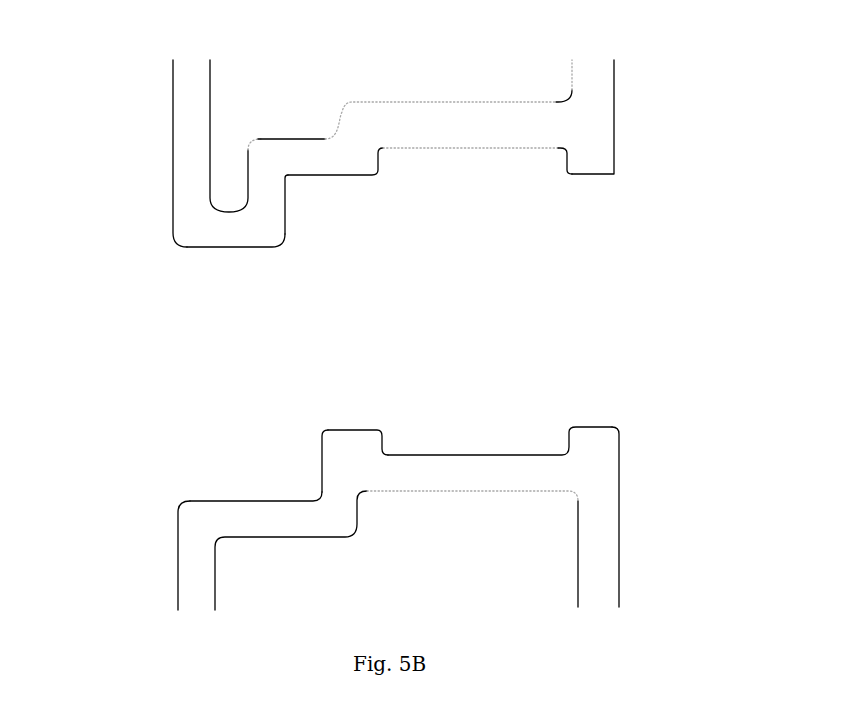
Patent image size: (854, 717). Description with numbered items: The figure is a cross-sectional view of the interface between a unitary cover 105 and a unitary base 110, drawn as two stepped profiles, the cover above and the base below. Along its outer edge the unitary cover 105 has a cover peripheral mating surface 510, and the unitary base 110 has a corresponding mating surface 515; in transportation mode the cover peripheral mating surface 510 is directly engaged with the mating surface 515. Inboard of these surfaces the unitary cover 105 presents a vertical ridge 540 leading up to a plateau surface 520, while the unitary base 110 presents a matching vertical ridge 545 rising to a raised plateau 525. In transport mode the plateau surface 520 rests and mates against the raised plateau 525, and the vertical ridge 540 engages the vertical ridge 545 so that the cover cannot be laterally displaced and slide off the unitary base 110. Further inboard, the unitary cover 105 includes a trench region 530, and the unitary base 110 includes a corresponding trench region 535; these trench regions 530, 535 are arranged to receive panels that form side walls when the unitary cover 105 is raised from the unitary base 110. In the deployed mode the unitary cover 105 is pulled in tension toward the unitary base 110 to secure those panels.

The unitary cover 105 is at (615, 83).
The unitary base 110 is at (620, 510).
The cover peripheral mating surface 510 is at (195, 247).
The mating surface 515 is at (200, 497).
The plateau surface 520 is at (340, 176).
The raised plateau 525 is at (353, 430).
The trench region 530 is at (468, 148).
The trench region 535 is at (477, 453).
The vertical ridge 540 is at (285, 233).
The vertical ridge 545 is at (320, 447).